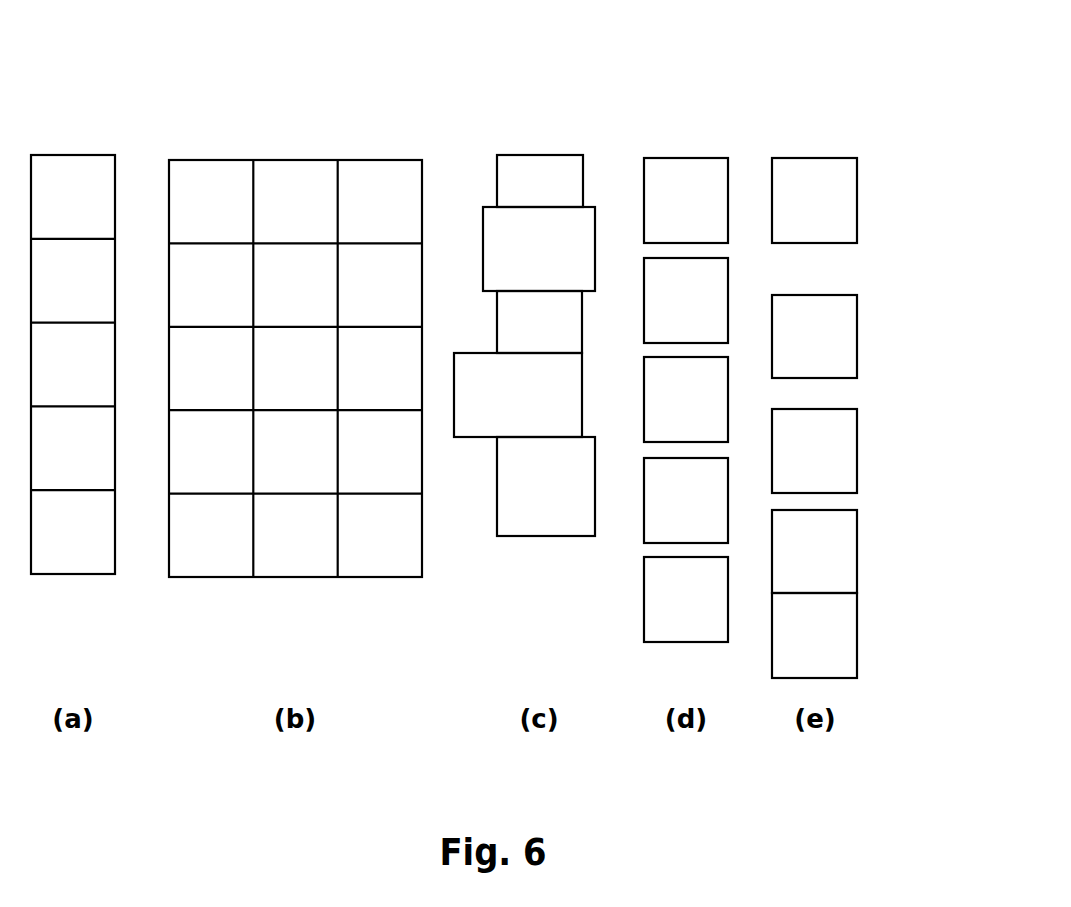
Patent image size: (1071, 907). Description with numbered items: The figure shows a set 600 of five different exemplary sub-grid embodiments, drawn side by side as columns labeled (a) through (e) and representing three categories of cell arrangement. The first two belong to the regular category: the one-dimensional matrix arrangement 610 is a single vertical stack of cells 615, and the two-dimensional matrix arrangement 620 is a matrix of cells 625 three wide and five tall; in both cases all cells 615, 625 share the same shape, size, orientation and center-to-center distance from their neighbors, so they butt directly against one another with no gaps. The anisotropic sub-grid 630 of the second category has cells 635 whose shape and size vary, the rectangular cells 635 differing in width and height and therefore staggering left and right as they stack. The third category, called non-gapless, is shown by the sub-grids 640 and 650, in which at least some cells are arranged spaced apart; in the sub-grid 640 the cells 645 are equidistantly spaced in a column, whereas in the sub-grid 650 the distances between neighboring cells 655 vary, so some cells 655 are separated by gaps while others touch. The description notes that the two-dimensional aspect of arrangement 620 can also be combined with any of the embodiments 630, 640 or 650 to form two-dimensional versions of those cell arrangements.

The set of exemplary sub-grid embodiments 600 is at (882, 58).
The one-dimensional matrix arrangement 610 is at (31, 142).
The cells of the one-dimensional matrix arrangement 615 is at (73, 364).
The two-dimensional matrix arrangement 620 is at (169, 142).
The cells of the two-dimensional matrix arrangement 625 is at (295, 368).
The anisotropic sub-grid 630 is at (454, 142).
The cells of the anisotropic sub-grid 635 is at (524, 345).
The equidistant non-gapless sub-grid 640 is at (644, 142).
The cells of the equidistant non-gapless sub-grid 645 is at (686, 400).
The non-equidistant non-gapless sub-grid 650 is at (772, 142).
The cells of the non-equidistant non-gapless sub-grid 655 is at (814, 418).